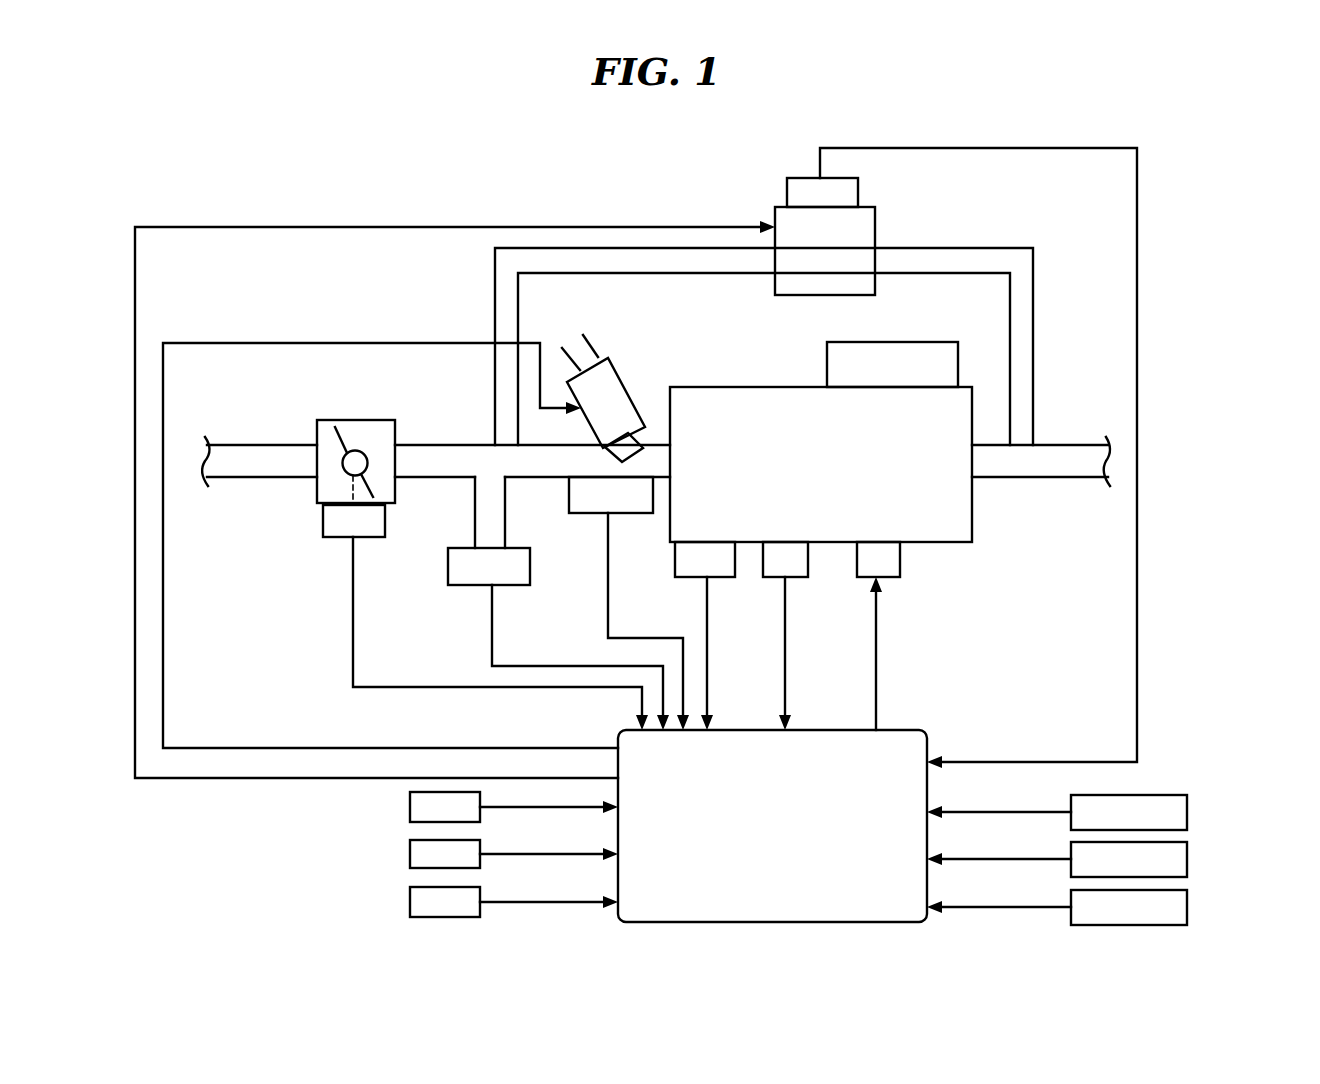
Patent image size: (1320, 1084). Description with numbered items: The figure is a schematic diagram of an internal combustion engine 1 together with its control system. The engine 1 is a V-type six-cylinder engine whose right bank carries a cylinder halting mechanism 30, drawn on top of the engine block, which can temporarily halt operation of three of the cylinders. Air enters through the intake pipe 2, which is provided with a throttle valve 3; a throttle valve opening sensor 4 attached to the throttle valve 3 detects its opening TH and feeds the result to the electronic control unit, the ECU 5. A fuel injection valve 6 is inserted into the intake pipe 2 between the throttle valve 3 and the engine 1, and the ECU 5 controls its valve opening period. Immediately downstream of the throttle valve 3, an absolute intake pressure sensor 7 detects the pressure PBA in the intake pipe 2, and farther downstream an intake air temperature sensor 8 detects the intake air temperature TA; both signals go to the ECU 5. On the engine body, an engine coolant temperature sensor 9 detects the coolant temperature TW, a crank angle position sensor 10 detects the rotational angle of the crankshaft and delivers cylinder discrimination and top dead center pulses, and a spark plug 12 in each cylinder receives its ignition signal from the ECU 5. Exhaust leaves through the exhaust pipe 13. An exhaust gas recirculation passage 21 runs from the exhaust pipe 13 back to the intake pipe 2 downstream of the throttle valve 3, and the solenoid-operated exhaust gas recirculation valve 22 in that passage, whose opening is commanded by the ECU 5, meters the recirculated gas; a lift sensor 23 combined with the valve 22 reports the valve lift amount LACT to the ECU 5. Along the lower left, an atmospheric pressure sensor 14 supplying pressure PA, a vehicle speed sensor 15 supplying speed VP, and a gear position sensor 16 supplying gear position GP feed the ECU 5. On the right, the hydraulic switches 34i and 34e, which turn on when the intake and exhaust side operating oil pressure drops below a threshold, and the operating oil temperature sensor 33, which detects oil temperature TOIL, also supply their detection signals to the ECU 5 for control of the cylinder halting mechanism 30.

The internal combustion engine 1 is at (742, 387).
The intake pipe 2 is at (425, 445).
The throttle valve 3 is at (335, 427).
The throttle valve opening sensor 4 is at (365, 538).
The electronic control unit 5 is at (857, 730).
The fuel injection valve 6 is at (627, 385).
The absolute intake pressure sensor 7 is at (517, 587).
The intake air temperature sensor 8 is at (635, 515).
The engine coolant temperature sensor 9 is at (720, 578).
The crank angle position sensor 10 is at (793, 578).
The spark plug 12 is at (887, 578).
The exhaust pipe 13 is at (1077, 445).
The atmospheric pressure sensor 14 is at (410, 797).
The vehicle speed sensor 15 is at (410, 844).
The gear position sensor 16 is at (410, 891).
The exhaust gas recirculation passage 21 is at (1003, 248).
The exhaust gas recirculation valve 22 is at (877, 225).
The lift sensor 23 is at (787, 188).
The cylinder halting mechanism 30 is at (898, 342).
The operating oil temperature sensor 33 is at (1189, 911).
The hydraulic switch 34i is at (1189, 816).
The hydraulic switch 34e is at (1189, 863).